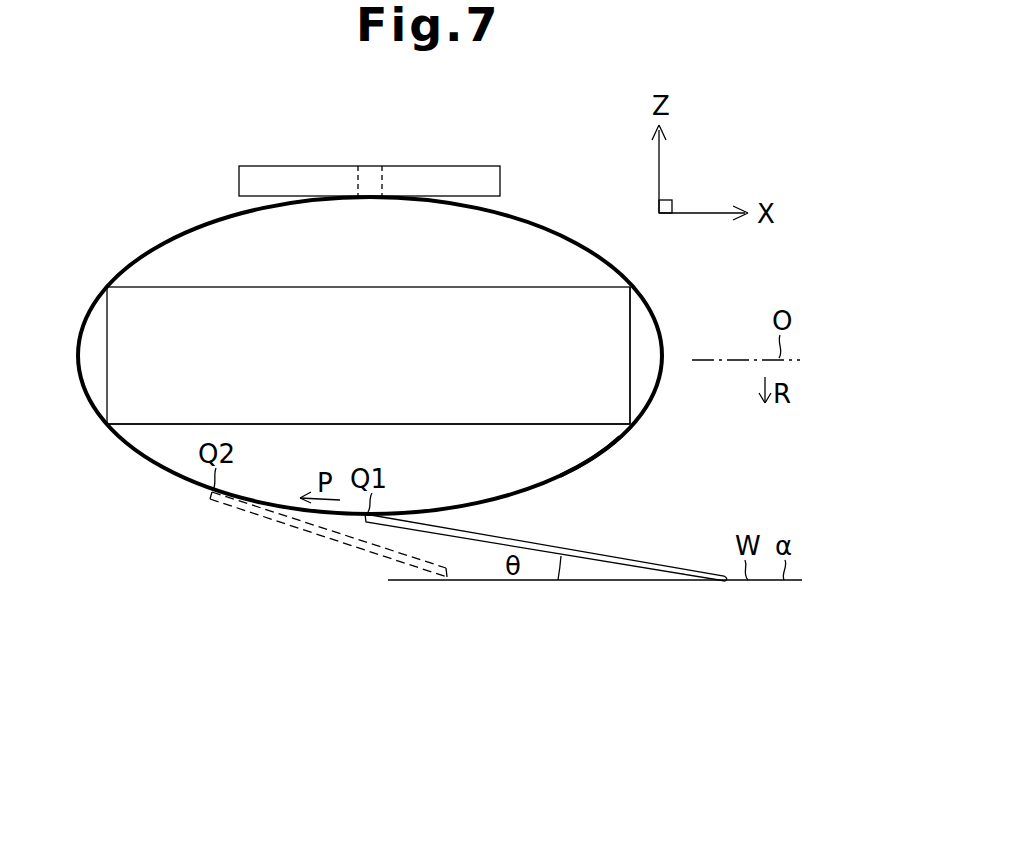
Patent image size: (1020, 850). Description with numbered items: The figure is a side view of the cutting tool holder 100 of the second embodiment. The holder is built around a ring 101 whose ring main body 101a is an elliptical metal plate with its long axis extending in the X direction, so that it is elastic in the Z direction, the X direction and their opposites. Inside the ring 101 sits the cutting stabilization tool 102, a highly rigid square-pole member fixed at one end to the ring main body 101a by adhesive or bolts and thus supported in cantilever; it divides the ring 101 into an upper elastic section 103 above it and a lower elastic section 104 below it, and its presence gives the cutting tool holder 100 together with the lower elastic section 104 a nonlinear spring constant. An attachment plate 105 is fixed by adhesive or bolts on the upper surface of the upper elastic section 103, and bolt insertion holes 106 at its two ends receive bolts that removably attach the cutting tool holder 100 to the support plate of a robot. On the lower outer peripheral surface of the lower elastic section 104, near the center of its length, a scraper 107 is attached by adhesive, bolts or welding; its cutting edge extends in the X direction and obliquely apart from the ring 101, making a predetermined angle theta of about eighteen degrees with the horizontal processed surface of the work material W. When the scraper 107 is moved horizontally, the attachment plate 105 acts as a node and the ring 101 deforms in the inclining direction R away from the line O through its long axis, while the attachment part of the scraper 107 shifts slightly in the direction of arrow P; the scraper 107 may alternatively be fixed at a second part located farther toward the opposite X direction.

The cutting tool holder 100 is at (137, 231).
The ring 101 is at (650, 312).
The ring main body 101a is at (645, 413).
The cutting stabilization tool 102 is at (450, 424).
The upper elastic section 103 is at (590, 245).
The lower elastic section 104 is at (590, 463).
The attachment plate 105 is at (500, 180).
The bolt insertion holes 106 is at (365, 166).
The scraper 107 is at (307, 533).